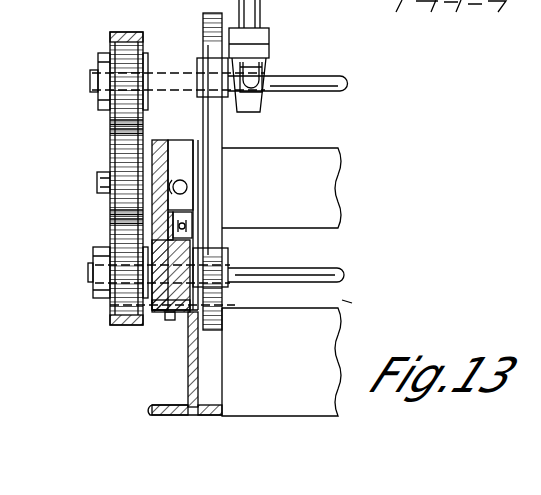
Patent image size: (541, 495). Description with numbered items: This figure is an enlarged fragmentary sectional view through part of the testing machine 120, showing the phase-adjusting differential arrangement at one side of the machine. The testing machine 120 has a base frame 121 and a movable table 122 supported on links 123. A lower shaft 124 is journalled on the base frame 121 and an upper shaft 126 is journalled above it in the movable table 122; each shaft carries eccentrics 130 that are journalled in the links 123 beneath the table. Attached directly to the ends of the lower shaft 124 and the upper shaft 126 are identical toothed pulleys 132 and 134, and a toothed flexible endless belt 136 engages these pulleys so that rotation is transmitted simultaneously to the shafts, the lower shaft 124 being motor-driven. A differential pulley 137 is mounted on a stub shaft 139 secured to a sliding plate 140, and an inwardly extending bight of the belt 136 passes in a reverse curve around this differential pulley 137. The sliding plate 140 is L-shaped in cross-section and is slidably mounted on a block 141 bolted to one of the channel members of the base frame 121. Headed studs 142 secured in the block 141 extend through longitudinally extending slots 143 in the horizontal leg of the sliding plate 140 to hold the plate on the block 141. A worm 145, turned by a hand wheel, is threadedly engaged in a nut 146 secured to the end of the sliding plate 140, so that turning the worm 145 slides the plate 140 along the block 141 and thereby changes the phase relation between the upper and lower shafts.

The testing machine 120 is at (350, 301).
The base frame 121 is at (300, 360).
The movable table 122 is at (268, 41).
The links 123 is at (209, 0).
The lower shaft 124 is at (302, 273).
The upper shaft 126 is at (308, 82).
The eccentrics 130 is at (198, 64).
The toothed pulley 132 is at (108, 309).
The toothed pulley 134 is at (119, 39).
The toothed flexible endless belt 136 is at (115, 130).
The differential pulley 137 is at (110, 218).
The stub shaft 139 is at (98, 182).
The sliding plate 140 is at (155, 142).
The block 141 is at (158, 314).
The headed stud 142 is at (186, 207).
The slot 143 is at (185, 226).
The worm 145 is at (186, 185).
The nut 146 is at (182, 154).